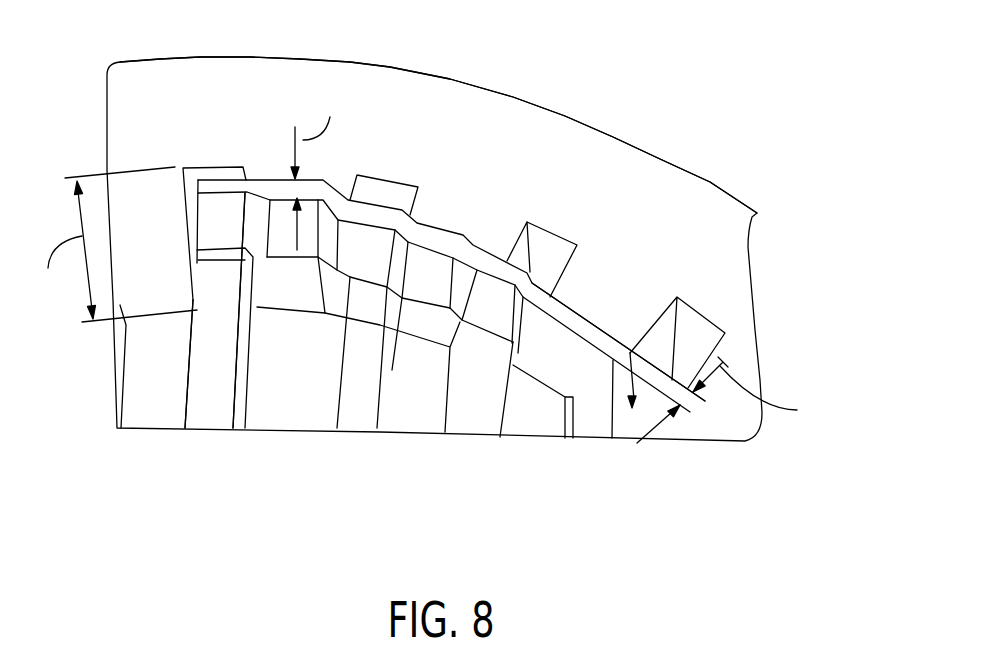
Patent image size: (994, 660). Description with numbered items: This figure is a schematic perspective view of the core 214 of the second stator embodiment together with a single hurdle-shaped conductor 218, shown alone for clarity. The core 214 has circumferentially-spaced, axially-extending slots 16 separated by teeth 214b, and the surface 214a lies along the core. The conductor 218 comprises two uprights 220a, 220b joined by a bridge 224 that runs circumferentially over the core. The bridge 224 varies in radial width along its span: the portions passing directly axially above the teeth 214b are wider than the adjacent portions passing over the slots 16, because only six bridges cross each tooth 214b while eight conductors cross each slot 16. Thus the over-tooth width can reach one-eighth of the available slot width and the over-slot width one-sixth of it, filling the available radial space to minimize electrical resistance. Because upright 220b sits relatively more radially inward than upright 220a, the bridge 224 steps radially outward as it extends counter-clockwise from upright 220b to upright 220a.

The slots 16 is at (220, 177).
The core 214 is at (627, 107).
The top edge of side wall 214a is at (502, 120).
The teeth 214b is at (152, 415).
The conductors 218 is at (477, 237).
The upright 220a is at (210, 415).
The upright 220b is at (595, 417).
The bridge 224 is at (587, 315).